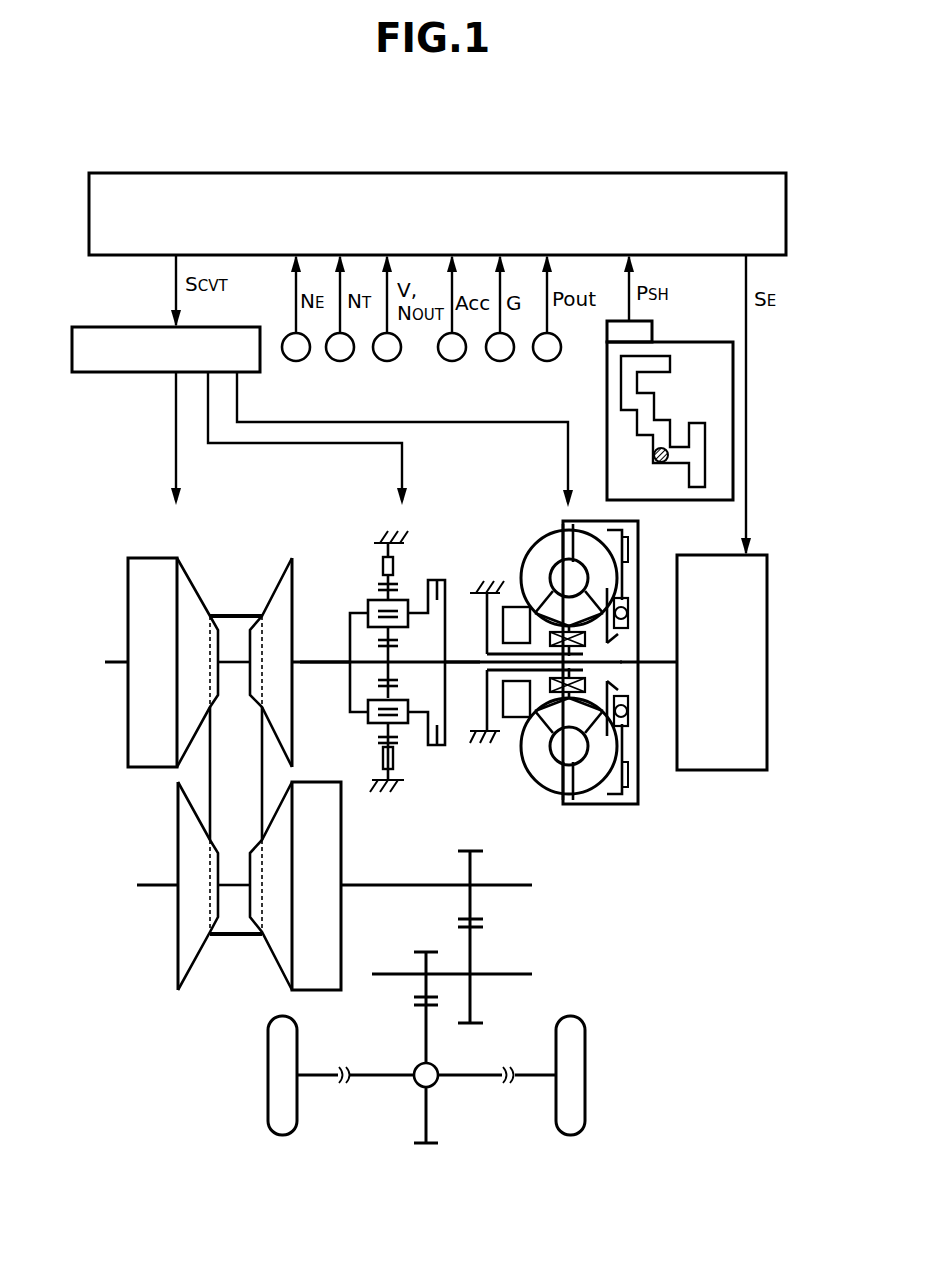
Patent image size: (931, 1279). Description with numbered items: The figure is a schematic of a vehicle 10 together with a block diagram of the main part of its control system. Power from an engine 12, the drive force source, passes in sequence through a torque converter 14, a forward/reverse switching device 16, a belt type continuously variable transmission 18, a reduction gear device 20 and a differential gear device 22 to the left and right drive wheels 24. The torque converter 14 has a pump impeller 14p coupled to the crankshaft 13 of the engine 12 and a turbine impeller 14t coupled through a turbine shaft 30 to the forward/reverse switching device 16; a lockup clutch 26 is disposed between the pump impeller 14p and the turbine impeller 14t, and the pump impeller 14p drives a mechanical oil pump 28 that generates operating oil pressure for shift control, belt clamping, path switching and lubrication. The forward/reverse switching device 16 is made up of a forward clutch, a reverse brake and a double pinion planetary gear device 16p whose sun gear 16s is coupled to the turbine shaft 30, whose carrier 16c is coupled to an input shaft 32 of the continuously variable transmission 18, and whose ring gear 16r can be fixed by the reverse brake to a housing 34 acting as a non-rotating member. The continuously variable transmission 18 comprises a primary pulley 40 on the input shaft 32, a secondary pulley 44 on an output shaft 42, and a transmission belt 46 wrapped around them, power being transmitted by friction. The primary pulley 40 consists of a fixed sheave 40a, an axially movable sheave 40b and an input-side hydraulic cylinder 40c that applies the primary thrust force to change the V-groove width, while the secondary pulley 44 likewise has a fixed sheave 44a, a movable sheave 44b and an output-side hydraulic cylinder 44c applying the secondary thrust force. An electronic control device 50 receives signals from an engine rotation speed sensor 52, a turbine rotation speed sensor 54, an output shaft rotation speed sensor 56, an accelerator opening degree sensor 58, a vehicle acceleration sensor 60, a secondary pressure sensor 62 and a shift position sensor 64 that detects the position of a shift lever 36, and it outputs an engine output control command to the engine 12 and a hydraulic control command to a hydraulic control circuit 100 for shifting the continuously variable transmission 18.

The vehicle 10 is at (678, 112).
The engine 12 is at (740, 770).
The crankshaft 13 is at (655, 670).
The torque converter 14 is at (485, 643).
The pump impeller 14p is at (540, 770).
The turbine impeller 14t is at (585, 777).
The forward/reverse switching device 16 is at (389, 612).
The planetary gear device 16p is at (388, 520).
The carrier 16c is at (368, 605).
The sun gear 16s is at (382, 675).
The ring gear 16r is at (380, 750).
The continuously variable transmission 18 is at (237, 818).
The reduction gear device 20 is at (538, 948).
The differential gear device 22 is at (418, 1080).
The drive wheels 24 is at (275, 1100).
The lockup clutch 26 is at (630, 545).
The mechanical oil pump 28 is at (516, 600).
The turbine shaft 30 is at (460, 670).
The input shaft 32 is at (318, 658).
The housing 34 is at (400, 545).
The shift lever 36 is at (665, 463).
The primary pulley 40 is at (189, 671).
The fixed sheave 40a is at (280, 590).
The movable sheave 40b is at (188, 590).
The input-side hydraulic cylinder 40c is at (140, 577).
The output shaft 42 is at (402, 890).
The secondary pulley 44 is at (239, 913).
The fixed sheave 44a is at (185, 947).
The movable sheave 44b is at (280, 942).
The output-side hydraulic cylinder 44c is at (335, 862).
The transmission belt 46 is at (236, 612).
The electronic control device 50 is at (733, 180).
The engine rotation speed sensor 52 is at (298, 360).
The turbine rotation speed sensor 54 is at (342, 360).
The output shaft rotation speed sensor 56 is at (389, 360).
The accelerator opening degree sensor 58 is at (454, 360).
The vehicle acceleration sensor 60 is at (502, 360).
The secondary pressure sensor 62 is at (549, 360).
The shift position sensor 64 is at (670, 399).
The hydraulic control circuit 100 is at (128, 372).